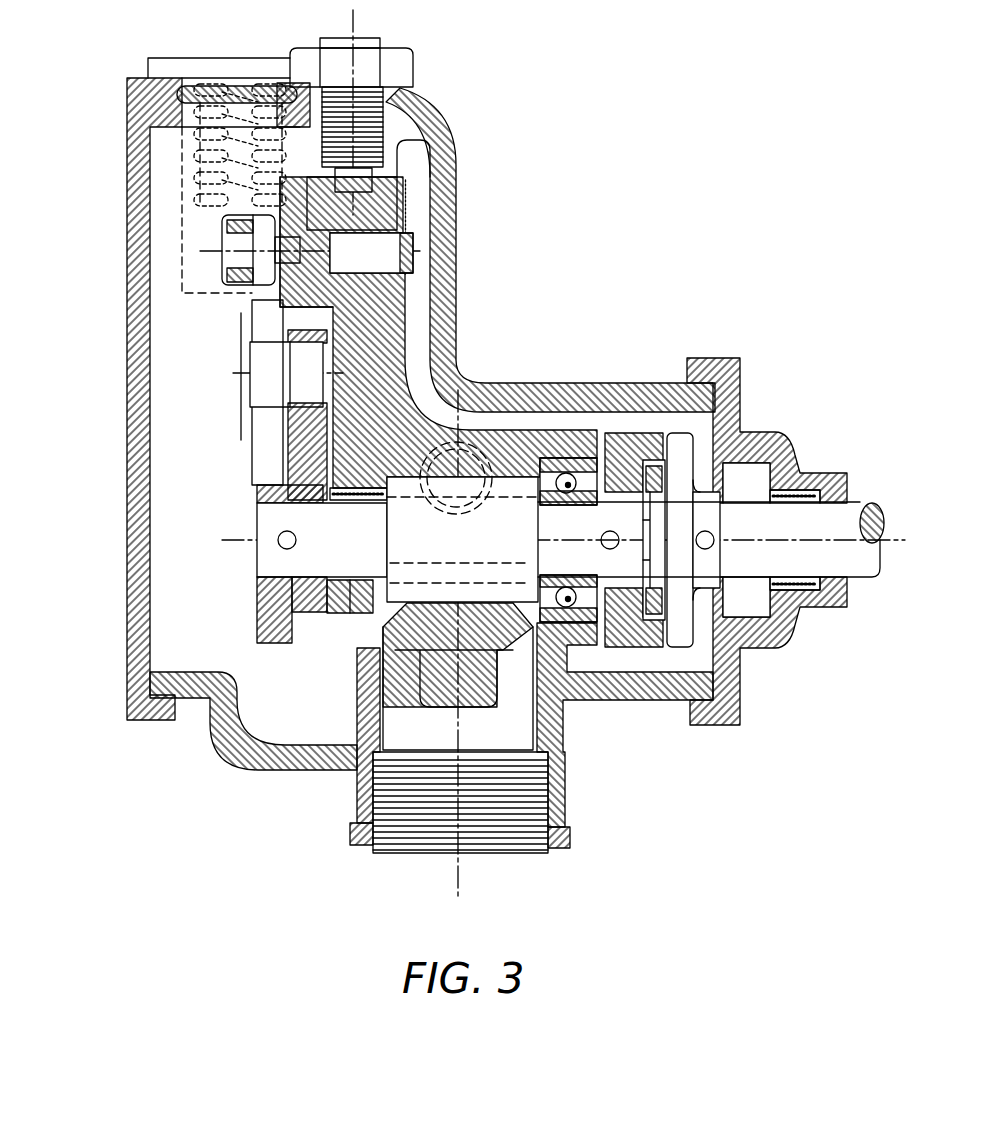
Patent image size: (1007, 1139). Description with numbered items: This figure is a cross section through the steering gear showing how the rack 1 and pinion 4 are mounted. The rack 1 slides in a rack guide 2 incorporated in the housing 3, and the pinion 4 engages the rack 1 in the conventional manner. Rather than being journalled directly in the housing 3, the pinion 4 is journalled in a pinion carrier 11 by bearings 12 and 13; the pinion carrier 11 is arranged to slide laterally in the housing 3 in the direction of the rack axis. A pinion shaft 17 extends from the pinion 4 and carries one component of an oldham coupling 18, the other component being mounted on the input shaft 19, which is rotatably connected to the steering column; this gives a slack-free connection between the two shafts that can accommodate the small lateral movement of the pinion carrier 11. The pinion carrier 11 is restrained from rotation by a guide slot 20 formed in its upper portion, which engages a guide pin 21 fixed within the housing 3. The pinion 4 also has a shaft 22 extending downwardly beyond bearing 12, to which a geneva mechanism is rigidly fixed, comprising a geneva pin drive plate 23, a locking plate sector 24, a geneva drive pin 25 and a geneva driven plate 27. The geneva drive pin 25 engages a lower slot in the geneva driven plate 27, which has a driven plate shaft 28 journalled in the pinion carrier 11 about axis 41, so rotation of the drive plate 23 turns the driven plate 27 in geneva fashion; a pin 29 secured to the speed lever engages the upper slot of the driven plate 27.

The rack 1 is at (415, 648).
The rack guide 2 is at (520, 724).
The housing 3 is at (667, 688).
The pinion 4 is at (500, 503).
The pinion carrier 11 is at (392, 343).
The bearing 12 is at (347, 613).
The bearing 13 is at (565, 478).
The pinion shaft 17 is at (607, 517).
The oldham coupling 18 is at (677, 632).
The input shaft 19 is at (745, 520).
The guide slot 20 is at (395, 200).
The guide pin 21 is at (408, 168).
The shaft 22 is at (263, 565).
The geneva pin drive plate 23 is at (300, 452).
The locking plate sector 24 is at (278, 660).
The geneva drive pin 25 is at (263, 355).
The geneva driven plate 27 is at (263, 318).
The driven plate shaft 28 is at (407, 288).
The pin 29 is at (262, 262).
The axis 41 is at (405, 258).